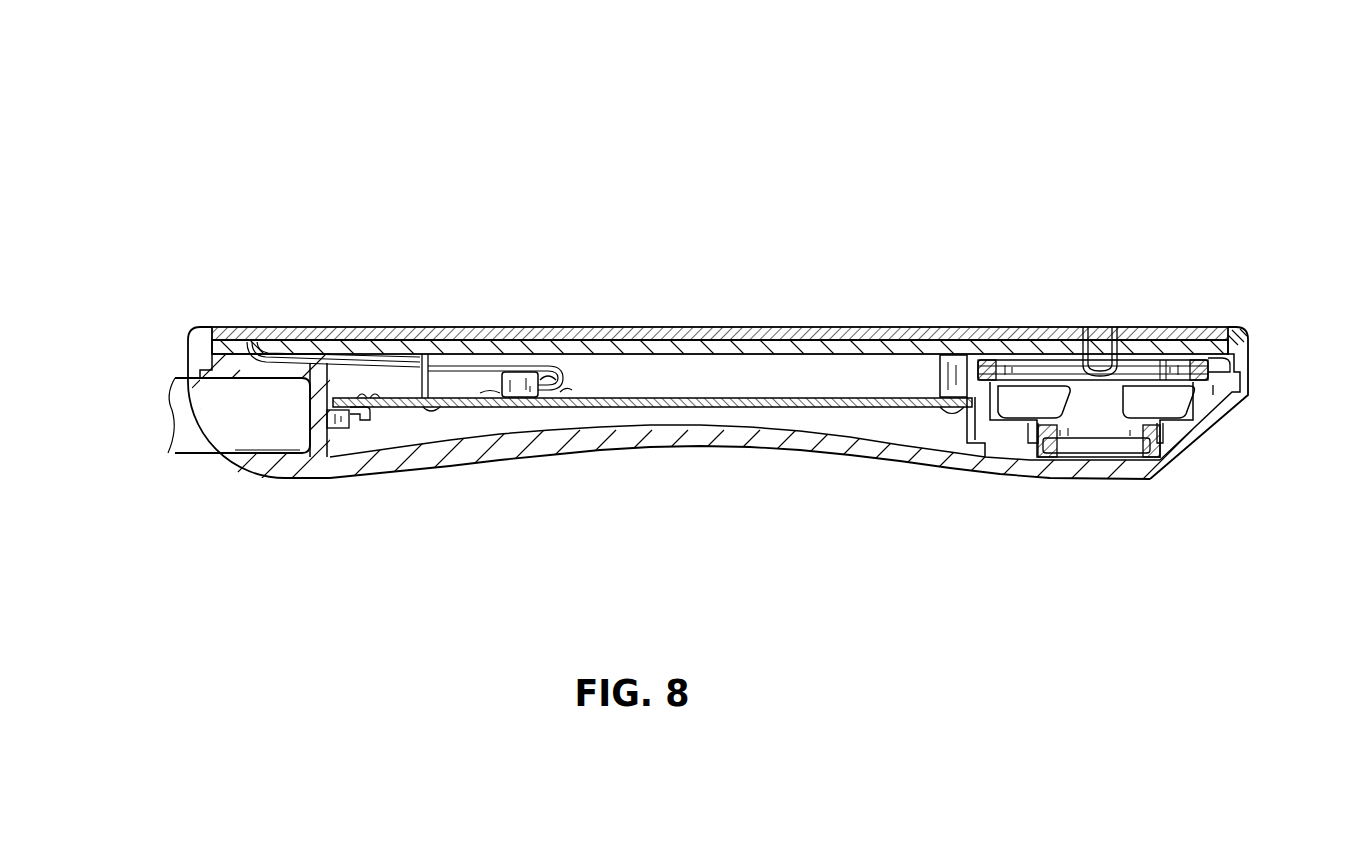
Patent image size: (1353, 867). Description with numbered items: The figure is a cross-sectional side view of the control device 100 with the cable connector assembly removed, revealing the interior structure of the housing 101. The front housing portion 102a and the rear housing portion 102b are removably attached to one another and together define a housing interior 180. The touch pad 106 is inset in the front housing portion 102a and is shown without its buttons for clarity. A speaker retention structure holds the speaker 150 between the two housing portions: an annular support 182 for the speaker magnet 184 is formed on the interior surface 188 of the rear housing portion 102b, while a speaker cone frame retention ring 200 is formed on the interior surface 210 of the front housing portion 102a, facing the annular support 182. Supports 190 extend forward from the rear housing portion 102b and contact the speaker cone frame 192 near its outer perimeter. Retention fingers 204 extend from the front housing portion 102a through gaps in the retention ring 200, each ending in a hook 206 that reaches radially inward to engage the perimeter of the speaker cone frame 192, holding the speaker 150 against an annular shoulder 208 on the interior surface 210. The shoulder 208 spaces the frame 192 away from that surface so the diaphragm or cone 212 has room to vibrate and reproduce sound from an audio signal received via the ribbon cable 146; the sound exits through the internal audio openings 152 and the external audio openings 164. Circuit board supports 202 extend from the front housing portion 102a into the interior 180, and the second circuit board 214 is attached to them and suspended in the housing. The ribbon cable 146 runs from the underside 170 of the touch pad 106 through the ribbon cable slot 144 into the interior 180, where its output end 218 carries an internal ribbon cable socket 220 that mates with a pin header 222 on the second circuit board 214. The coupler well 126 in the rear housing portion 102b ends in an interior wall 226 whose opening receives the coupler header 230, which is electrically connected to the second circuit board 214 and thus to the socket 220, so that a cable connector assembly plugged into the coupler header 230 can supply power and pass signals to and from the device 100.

The control device 100 is at (1163, 157).
The housing 101 is at (497, 510).
The front housing portion 102a is at (1243, 335).
The rear housing portion 102b is at (247, 472).
The touch pad 106 is at (718, 330).
The coupler well 126 is at (255, 423).
The ribbon cable slot 144 is at (245, 355).
The ribbon cable 146 is at (578, 368).
The speaker 150 is at (1185, 425).
The internal audio openings 152 is at (1175, 330).
The external audio openings 164 is at (1108, 350).
The underside of the touch pad 170 is at (683, 340).
The housing interior 180 is at (812, 385).
The annular support 182 is at (1022, 463).
The speaker magnet 184 is at (1075, 445).
The interior surface of the rear housing portion 188 is at (858, 420).
The supports 190 is at (946, 380).
The speaker cone frame 192 is at (1105, 400).
The speaker cone frame retention ring 200 is at (960, 367).
The circuit board supports 202 is at (405, 375).
The retention fingers 204 is at (1212, 368).
The hook 206 is at (1213, 367).
The annular shoulder 208 is at (985, 360).
The interior surface of the front housing portion 210 is at (890, 360).
The diaphragm or cone 212 is at (1165, 398).
The second circuit board 214 is at (735, 410).
The output end of the ribbon cable 218 is at (572, 387).
The internal ribbon cable socket 220 is at (533, 400).
The pin header 222 is at (495, 395).
The interior wall 226 is at (318, 440).
The coupler header 230 is at (348, 436).